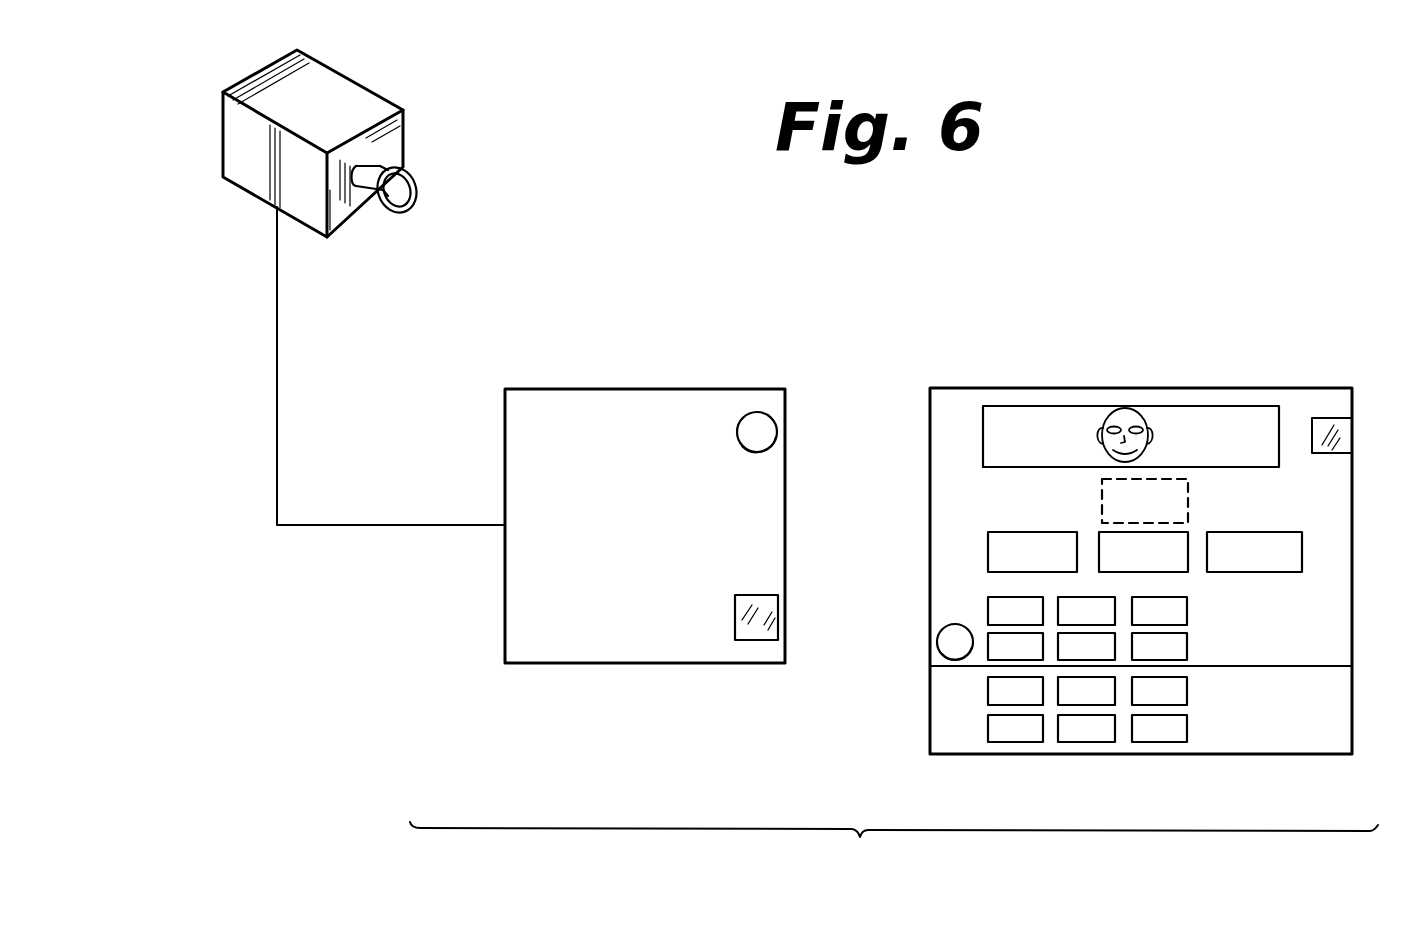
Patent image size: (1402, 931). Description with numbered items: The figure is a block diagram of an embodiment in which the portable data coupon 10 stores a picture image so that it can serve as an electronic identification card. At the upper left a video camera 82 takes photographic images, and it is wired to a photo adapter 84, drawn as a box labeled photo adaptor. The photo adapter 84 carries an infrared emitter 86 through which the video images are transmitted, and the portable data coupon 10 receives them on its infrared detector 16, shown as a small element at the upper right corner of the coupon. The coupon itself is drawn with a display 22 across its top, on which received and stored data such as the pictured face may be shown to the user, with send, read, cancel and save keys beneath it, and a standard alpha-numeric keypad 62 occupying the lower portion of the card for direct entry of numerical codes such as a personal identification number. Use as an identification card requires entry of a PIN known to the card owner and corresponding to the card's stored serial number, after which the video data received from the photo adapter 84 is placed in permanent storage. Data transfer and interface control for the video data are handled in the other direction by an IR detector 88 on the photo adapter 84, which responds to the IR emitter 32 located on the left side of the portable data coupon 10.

The portable data coupon 10 is at (943, 357).
The IR detector 16 is at (1327, 418).
The display 22 is at (1040, 405).
The IR emitter 32 is at (945, 625).
The alpha-numeric keypad 62 is at (945, 713).
The video camera 82 is at (343, 94).
The photo adapter 84 is at (585, 653).
The infrared emitter 86 is at (758, 412).
The IR detector 88 is at (753, 642).